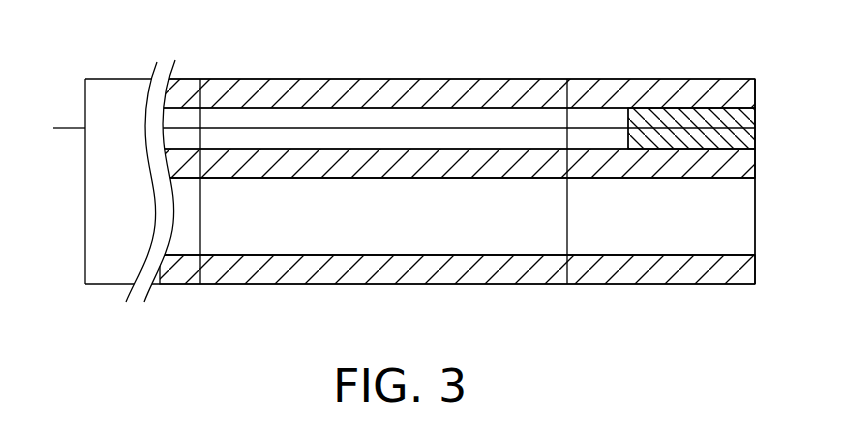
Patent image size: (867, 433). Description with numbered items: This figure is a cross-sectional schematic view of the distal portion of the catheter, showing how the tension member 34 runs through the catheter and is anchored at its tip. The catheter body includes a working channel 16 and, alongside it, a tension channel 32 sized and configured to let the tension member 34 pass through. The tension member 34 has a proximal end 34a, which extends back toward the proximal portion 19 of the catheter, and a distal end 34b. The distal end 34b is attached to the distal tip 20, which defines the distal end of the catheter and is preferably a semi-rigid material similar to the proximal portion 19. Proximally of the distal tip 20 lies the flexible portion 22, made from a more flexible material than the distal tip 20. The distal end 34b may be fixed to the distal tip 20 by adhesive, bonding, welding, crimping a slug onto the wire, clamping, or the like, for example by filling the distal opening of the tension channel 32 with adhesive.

The working channel 16 is at (308, 237).
The proximal portion 19 is at (180, 78).
The distal tip 20 is at (642, 78).
The flexible portion 22 is at (427, 285).
The tension channel 32 is at (247, 78).
The tension member 34 is at (393, 128).
The proximal end of tension member 34a is at (68, 128).
The distal end of tension member 34b is at (687, 128).